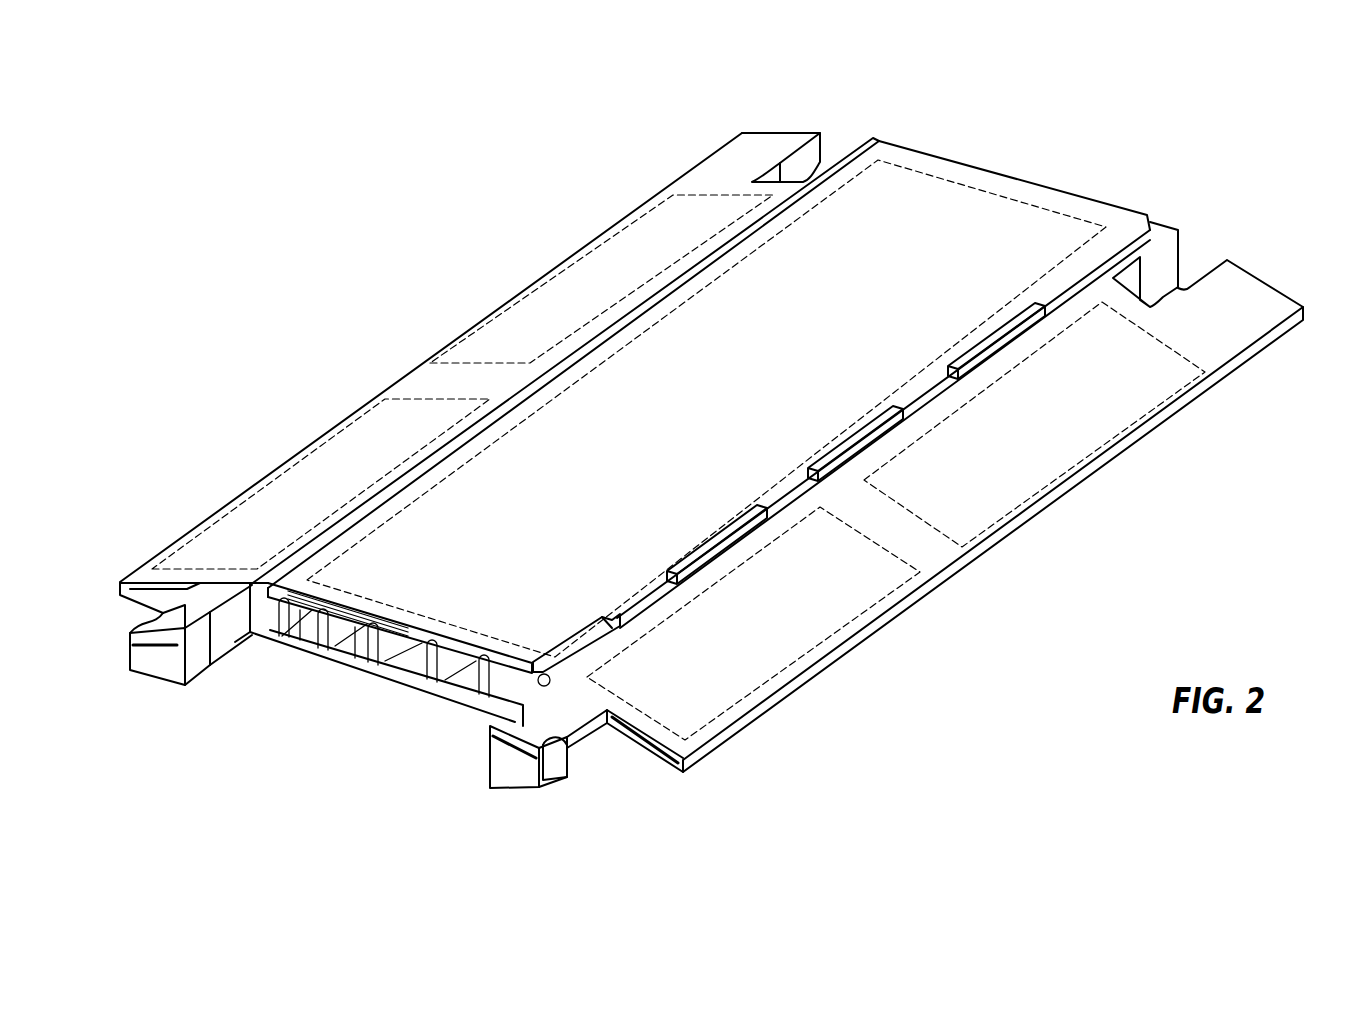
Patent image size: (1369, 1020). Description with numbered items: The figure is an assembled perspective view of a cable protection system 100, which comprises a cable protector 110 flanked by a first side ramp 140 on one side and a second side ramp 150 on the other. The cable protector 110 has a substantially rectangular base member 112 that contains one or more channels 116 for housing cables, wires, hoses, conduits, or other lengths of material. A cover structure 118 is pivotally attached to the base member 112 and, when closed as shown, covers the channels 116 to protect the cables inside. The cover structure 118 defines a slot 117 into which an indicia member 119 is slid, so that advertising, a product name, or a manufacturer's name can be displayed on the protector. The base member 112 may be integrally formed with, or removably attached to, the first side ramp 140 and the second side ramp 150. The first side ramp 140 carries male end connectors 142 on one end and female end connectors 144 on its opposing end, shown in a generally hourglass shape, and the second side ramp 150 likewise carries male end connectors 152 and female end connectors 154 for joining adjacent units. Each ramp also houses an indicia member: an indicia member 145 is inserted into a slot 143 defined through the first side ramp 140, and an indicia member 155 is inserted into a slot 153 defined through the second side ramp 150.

The cable protection system 100 is at (1250, 208).
The cable protector 110 is at (397, 700).
The base member 112 is at (330, 648).
The channels 116 is at (303, 616).
The slot 117 is at (352, 637).
The cover structure 118 is at (1030, 185).
The indicia member 119 is at (918, 193).
The first side ramp 140 is at (925, 555).
The male end connectors 142 is at (525, 790).
The slot 143 is at (528, 752).
The female end connectors 144 is at (1197, 256).
The indicia member 145 is at (1035, 460).
The second side ramp 150 is at (435, 382).
The male end connectors 152 is at (163, 672).
The slot 153 is at (133, 645).
The female end connectors 154 is at (840, 143).
The indicia member 155 is at (563, 291).